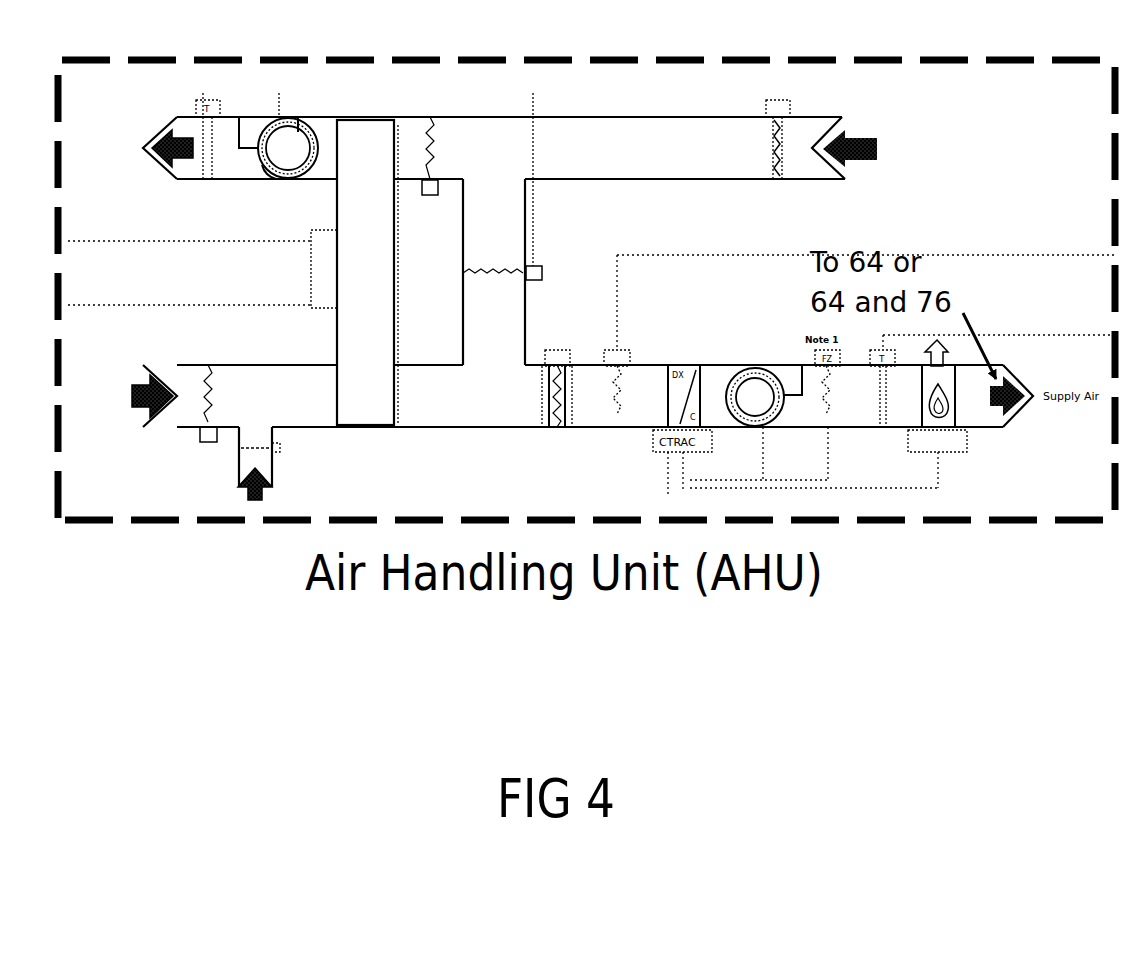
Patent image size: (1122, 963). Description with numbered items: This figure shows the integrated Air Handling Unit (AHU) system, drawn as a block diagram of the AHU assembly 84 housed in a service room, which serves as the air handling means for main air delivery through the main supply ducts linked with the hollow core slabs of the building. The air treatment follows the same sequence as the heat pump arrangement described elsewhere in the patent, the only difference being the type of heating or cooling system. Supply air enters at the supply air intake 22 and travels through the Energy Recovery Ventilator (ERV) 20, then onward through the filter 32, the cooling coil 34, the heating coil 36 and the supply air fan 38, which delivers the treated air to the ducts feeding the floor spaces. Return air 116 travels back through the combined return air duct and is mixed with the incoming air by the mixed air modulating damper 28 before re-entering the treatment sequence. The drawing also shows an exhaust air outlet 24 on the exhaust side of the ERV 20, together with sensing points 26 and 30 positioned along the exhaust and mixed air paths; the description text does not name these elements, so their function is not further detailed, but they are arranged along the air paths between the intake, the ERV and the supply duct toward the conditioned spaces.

The air handling unit (AHU) assembly 84 is at (586, 265).
The Energy Recovery Ventilator (ERV) 20 is at (233, 272).
The supply air intake 22 is at (133, 396).
The exhaust air outlet 24 is at (130, 146).
The exhaust air sensor 26 is at (432, 164).
The mixed air modulating damper 28 is at (209, 414).
The mixed air sensor 30 is at (516, 195).
The filter 32 is at (542, 409).
The cooling coil 34 is at (859, 334).
The heating coil 36 is at (925, 413).
The supply air fan 38 is at (764, 396).
The return air 116 is at (858, 139).